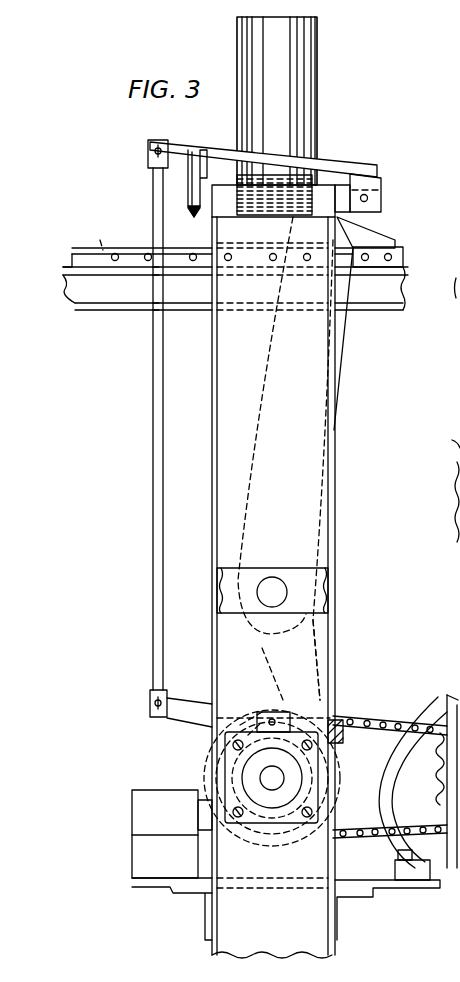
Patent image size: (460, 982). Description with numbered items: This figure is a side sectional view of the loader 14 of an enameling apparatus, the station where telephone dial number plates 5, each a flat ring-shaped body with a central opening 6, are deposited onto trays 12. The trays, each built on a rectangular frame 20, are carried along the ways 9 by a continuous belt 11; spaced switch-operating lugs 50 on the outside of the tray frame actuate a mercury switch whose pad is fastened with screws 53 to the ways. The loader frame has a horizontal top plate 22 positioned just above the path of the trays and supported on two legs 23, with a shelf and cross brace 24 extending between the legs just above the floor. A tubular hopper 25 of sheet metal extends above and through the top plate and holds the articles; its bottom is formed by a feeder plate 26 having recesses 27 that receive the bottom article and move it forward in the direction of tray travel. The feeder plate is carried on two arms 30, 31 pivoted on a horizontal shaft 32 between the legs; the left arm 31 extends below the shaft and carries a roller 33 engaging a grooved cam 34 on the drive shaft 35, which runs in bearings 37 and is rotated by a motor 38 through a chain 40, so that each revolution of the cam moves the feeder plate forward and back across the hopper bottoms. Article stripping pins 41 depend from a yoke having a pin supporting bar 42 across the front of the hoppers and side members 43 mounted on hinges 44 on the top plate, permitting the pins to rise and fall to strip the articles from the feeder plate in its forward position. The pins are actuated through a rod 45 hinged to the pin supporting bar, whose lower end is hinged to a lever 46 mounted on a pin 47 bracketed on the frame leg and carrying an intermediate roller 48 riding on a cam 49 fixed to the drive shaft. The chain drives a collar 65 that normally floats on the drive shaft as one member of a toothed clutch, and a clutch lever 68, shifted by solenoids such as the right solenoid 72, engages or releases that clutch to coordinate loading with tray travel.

The telephone dial number plate 5 is at (102, 248).
The central opening 6 is at (458, 490).
The ways 9 is at (112, 297).
The continuous belt 11 is at (70, 292).
The tray 12 is at (65, 260).
The loader 14 is at (151, 419).
The rectangular frame 20 is at (128, 252).
The top plate 22 is at (325, 190).
The leg 23 is at (320, 633).
The shelf and cross brace 24 is at (185, 887).
The tubular hopper 25 is at (318, 88).
The feeder plate 26 is at (380, 238).
The recess 27 is at (290, 219).
The right arm 30 is at (340, 347).
The left arm 31 is at (315, 672).
The horizontal shaft 32 is at (268, 578).
The roller 33 is at (333, 775).
The grooved cam 34 is at (390, 849).
The drive shaft 35 is at (278, 789).
The bearing 37 is at (291, 824).
The motor 38 is at (425, 700).
The chain 40 is at (382, 718).
The article stripping pin 41 is at (190, 196).
The pin supporting bar 42 is at (182, 144).
The side member 43 is at (265, 150).
The hinge 44 is at (367, 199).
The rod 45 is at (153, 410).
The lever 46 is at (181, 705).
The pin 47 is at (345, 722).
The intermediate roller 48 is at (285, 712).
The cam 49 is at (258, 716).
The switch-operating lug 50 is at (456, 292).
The screw 53 is at (453, 665).
The collar 65 is at (330, 768).
The clutch lever 68 is at (198, 805).
The right solenoid 72 is at (142, 796).